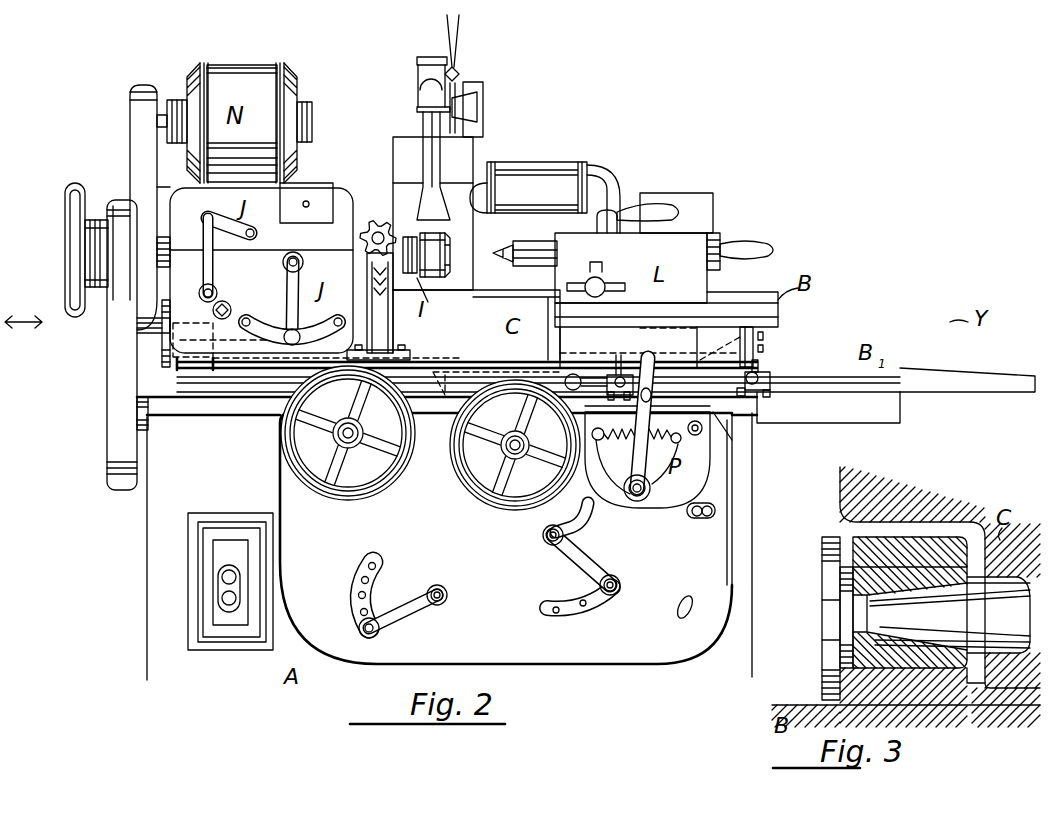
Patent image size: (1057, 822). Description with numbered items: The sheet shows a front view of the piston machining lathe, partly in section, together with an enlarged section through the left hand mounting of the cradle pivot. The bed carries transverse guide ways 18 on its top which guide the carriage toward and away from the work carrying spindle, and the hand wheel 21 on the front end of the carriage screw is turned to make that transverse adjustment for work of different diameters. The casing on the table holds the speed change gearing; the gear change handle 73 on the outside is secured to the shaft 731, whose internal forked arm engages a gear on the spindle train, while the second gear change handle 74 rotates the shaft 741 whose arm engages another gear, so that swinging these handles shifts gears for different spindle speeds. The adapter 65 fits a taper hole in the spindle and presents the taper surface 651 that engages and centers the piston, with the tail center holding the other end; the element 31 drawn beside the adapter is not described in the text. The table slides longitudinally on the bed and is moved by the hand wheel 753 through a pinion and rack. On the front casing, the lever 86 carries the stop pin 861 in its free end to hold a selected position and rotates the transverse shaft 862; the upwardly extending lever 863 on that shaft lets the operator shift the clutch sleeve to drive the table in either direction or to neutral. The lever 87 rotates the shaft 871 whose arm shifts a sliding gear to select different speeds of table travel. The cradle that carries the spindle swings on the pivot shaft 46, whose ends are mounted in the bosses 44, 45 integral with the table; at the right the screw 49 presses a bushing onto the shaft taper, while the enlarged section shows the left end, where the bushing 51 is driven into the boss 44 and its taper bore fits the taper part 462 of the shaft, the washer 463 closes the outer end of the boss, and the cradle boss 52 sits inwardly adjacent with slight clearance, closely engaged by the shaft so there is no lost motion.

In FIG. 2, the gear change handle 74 is at (216, 262).
In FIG. 2, the shaft 741 is at (218, 293).
In FIG. 2, the shaft 731 is at (303, 264).
In FIG. 2, the gear change handle 73 is at (291, 302).
In FIG. 2, the guide ways 18 is at (443, 375).
In FIG. 2, the adapter 65 is at (433, 278).
In FIG. 2, the taper surface 651 is at (445, 237).
In FIG. 2, the dead center 31 is at (545, 238).
In FIG. 2, the screw 49 is at (758, 337).
In FIG. 2, the boss 45 is at (763, 361).
In FIG. 2, the pivot shaft 46 is at (262, 360).
In FIG. 3, the pivot shaft 46 is at (941, 615).
In FIG. 2, the boss 44 is at (165, 342).
In FIG. 3, the boss 44 is at (940, 690).
In FIG. 2, the hand wheel 21 is at (373, 493).
In FIG. 2, the hand wheel 753 is at (512, 508).
In FIG. 2, the stop pin 861 is at (613, 594).
In FIG. 2, the lever 86 is at (583, 557).
In FIG. 2, the lever 863 is at (565, 510).
In FIG. 2, the transverse shaft 862 is at (552, 548).
In FIG. 2, the lever 87 is at (410, 608).
In FIG. 2, the shaft 871 is at (447, 590).
In FIG. 3, the boss 52 is at (1015, 682).
In FIG. 3, the washer 463 is at (828, 545).
In FIG. 3, the taper part 462 is at (835, 662).
In FIG. 3, the bushing 51 is at (845, 578).